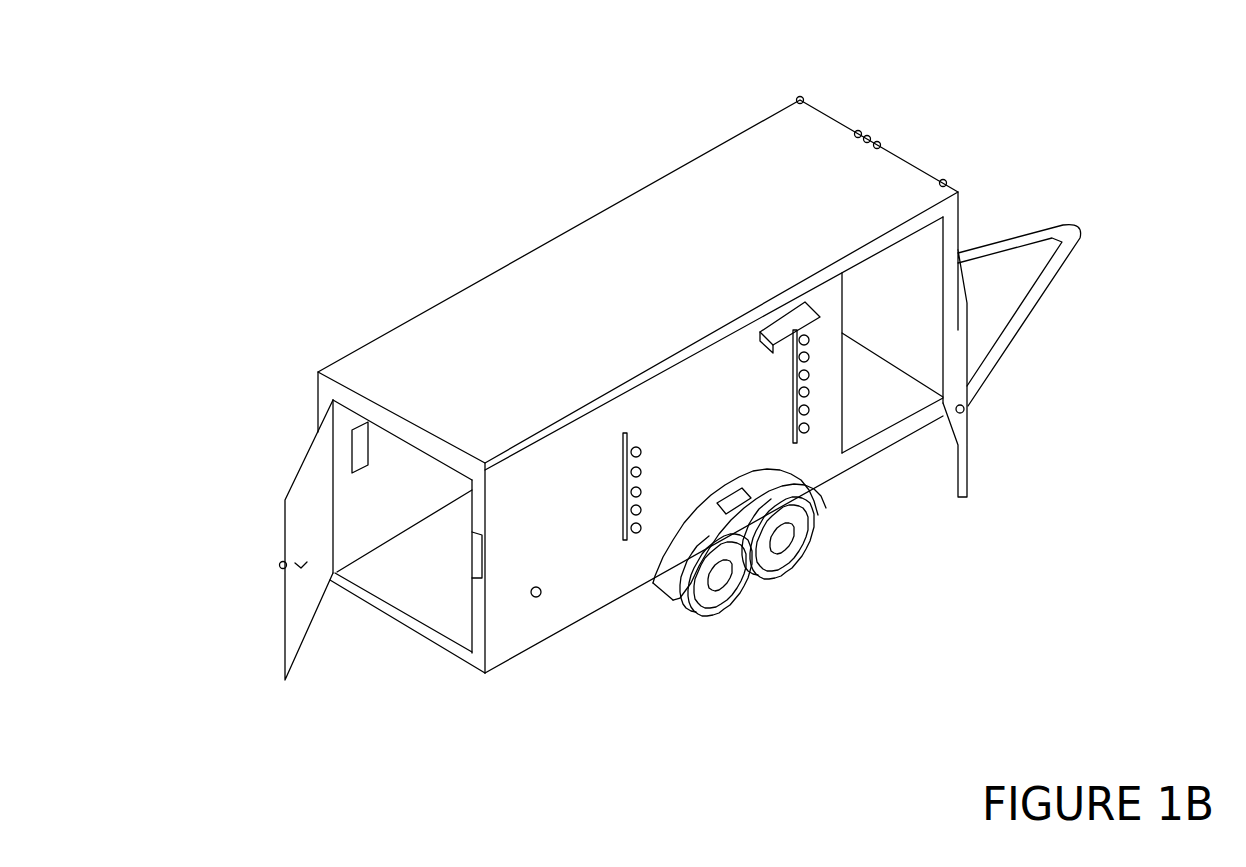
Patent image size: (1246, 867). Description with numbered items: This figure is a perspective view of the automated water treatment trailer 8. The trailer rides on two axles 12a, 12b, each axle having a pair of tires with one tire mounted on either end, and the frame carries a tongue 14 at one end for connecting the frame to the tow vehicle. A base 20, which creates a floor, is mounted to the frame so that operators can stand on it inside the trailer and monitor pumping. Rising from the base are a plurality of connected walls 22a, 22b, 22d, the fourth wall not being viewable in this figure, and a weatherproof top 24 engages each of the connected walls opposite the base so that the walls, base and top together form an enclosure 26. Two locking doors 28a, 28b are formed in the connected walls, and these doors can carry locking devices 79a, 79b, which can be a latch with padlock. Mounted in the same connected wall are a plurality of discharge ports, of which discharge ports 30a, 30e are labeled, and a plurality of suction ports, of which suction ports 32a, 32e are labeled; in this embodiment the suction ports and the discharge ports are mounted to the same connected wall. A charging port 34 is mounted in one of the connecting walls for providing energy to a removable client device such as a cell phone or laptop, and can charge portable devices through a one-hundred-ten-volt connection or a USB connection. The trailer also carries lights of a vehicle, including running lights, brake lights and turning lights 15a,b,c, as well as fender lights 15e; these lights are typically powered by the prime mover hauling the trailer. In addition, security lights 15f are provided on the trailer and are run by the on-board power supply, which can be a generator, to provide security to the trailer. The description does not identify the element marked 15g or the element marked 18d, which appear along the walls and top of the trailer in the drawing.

The automated water treatment trailer 8 is at (805, 588).
The axle 12a is at (725, 580).
The axle 12b is at (788, 542).
The tongue 14 is at (1025, 312).
The running lights, brake lights, and turning lights 15a,b,c is at (487, 652).
The fender lights 15e is at (749, 508).
The security lights 15f is at (772, 323).
The sensor 15g is at (352, 437).
The sensor 18d is at (804, 99).
The base 20 is at (408, 600).
The connected wall 22a is at (582, 578).
The connected wall 22b is at (317, 378).
The connected wall 22d is at (921, 360).
The weatherproof top 24 is at (462, 380).
The enclosure 26 is at (450, 608).
The locking door 28a is at (300, 628).
The locking door 28b is at (957, 440).
The discharge port 30a is at (645, 445).
The discharge port 30e is at (641, 540).
The suction port 32a is at (793, 368).
The suction port 32e is at (813, 437).
The charging port 34 is at (534, 600).
The locking device 79a is at (282, 563).
The locking device 79b is at (964, 409).